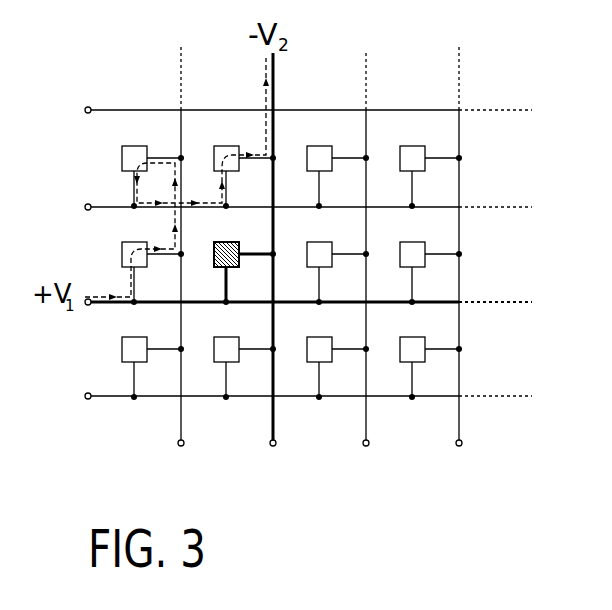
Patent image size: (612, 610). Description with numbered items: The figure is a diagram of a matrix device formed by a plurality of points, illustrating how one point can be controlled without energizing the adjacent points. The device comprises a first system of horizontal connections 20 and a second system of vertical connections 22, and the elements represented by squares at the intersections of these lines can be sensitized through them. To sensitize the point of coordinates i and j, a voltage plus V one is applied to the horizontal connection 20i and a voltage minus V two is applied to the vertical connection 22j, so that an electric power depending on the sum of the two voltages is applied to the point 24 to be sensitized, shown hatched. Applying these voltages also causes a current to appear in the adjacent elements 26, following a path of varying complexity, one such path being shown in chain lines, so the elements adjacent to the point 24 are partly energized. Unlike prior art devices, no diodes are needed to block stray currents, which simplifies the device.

The horizontal connections 20 is at (87, 203).
The horizontal connection i 20i is at (88, 304).
The vertical connections 22 is at (460, 474).
The vertical connection j 22j is at (278, 446).
The point to be sensitized 24 is at (213, 262).
The memory cells 26 is at (314, 253).